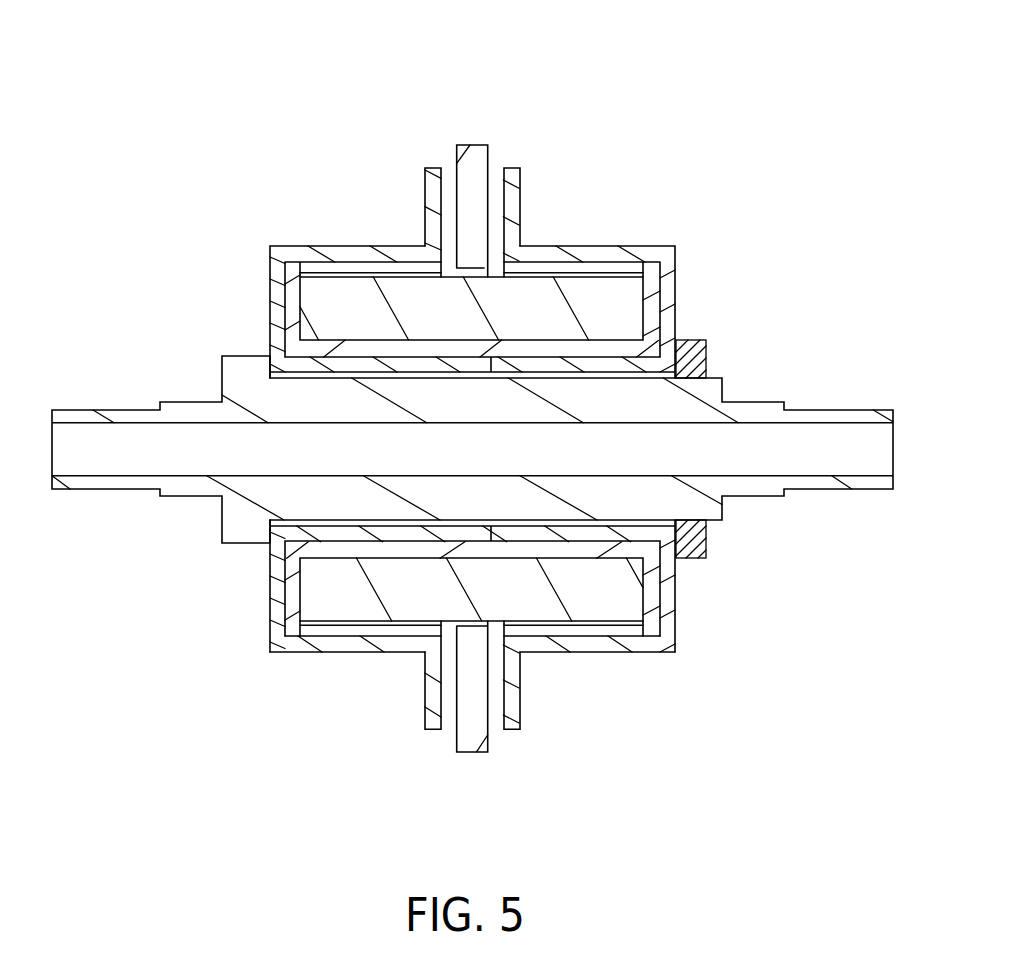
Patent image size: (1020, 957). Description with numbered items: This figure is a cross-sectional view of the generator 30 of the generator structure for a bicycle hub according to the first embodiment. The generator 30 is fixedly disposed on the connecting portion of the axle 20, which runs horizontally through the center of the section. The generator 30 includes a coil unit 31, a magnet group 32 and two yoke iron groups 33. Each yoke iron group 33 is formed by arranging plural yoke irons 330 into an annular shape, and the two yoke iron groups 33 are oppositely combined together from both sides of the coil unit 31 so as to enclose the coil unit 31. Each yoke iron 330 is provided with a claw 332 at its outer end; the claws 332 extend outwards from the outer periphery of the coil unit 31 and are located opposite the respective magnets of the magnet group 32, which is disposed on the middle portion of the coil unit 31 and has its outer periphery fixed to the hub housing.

The axle 20 is at (125, 417).
The generator 30 is at (552, 56).
The coil unit 31 is at (532, 310).
The magnet group 32 is at (471, 163).
The yoke iron group 33 is at (357, 256).
The yoke iron 330 is at (645, 643).
The claw 332 is at (435, 693).